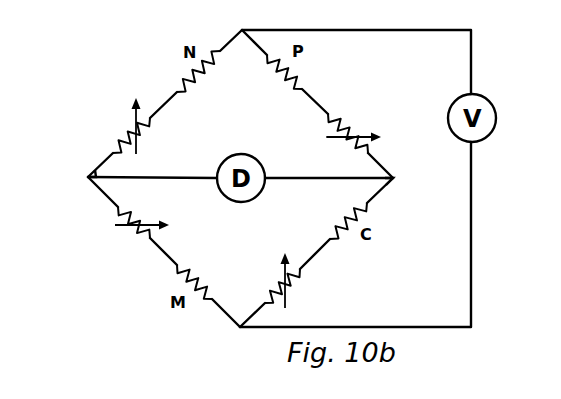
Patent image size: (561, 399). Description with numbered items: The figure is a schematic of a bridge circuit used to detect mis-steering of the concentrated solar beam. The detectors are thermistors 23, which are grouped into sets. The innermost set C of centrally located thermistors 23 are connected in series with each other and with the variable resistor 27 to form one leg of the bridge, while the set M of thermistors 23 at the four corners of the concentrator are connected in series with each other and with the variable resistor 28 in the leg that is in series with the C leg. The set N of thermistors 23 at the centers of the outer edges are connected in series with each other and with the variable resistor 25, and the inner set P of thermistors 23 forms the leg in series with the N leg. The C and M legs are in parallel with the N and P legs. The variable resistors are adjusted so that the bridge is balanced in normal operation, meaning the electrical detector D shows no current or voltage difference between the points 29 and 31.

The thermistors 23 is at (188, 63).
The variable resistor 25 is at (127, 144).
The variable resistor 27 is at (300, 272).
The variable resistor 28 is at (119, 207).
The point 29 is at (396, 179).
The point 31 is at (86, 177).